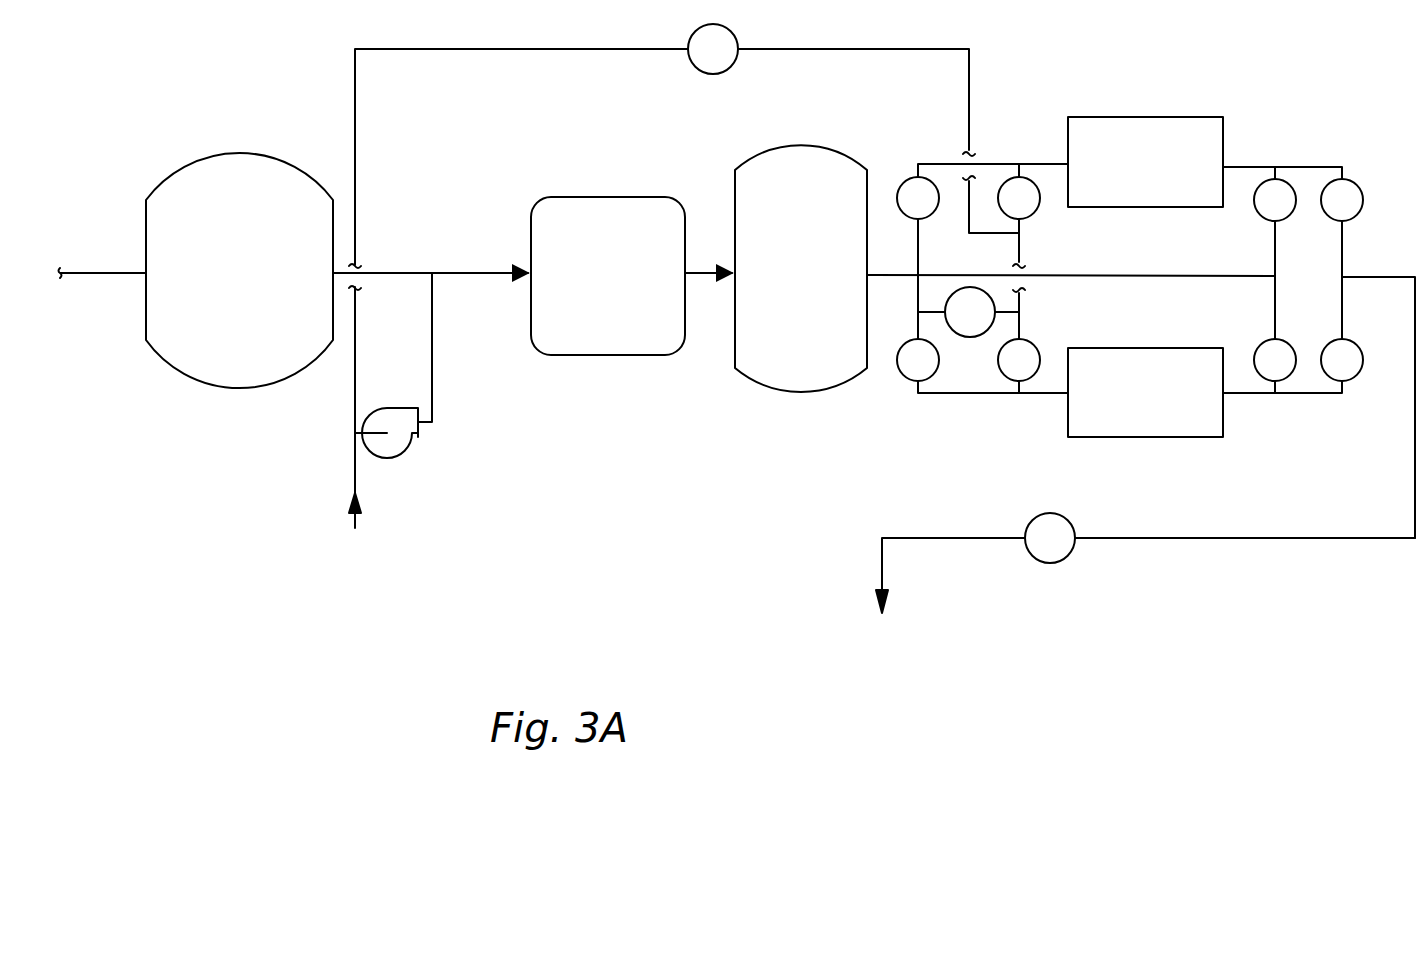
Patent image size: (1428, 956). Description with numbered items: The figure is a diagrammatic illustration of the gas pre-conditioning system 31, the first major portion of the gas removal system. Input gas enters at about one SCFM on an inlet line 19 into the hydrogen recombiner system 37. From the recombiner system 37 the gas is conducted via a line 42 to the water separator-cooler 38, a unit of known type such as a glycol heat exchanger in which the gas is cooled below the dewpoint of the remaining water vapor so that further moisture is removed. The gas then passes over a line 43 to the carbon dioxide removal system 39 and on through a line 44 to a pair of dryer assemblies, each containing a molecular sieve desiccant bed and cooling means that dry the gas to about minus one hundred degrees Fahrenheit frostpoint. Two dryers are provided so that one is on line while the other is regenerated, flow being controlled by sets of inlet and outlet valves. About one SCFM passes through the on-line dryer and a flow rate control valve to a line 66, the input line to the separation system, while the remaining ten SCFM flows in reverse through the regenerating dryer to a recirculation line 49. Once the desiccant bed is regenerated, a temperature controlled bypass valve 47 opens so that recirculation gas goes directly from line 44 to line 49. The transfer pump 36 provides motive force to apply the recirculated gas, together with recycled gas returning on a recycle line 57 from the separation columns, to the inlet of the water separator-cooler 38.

The inlet gas line 19 is at (107, 274).
The gas pre-conditioning system 31 is at (330, 116).
The transfer vacuum pump 36 is at (387, 408).
The hydrogen recombiner system 37 is at (212, 157).
The water separator-cooler 38 is at (627, 197).
The carbon dioxide removal system 39 is at (803, 145).
The line 42 is at (394, 273).
The line from cooler to CO2 remover 43 is at (701, 273).
The line 44 is at (891, 275).
The temperature controlled bypass valve 47 is at (972, 337).
The recirculation line 49 is at (426, 50).
The recycle line 57 is at (352, 480).
The line 66 is at (882, 562).